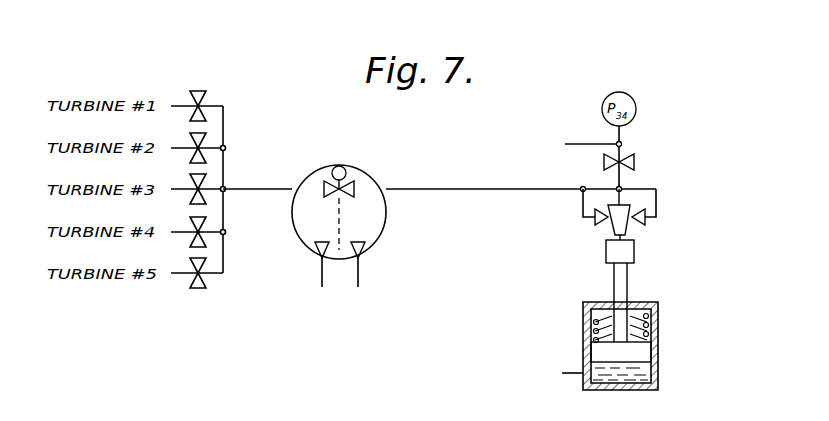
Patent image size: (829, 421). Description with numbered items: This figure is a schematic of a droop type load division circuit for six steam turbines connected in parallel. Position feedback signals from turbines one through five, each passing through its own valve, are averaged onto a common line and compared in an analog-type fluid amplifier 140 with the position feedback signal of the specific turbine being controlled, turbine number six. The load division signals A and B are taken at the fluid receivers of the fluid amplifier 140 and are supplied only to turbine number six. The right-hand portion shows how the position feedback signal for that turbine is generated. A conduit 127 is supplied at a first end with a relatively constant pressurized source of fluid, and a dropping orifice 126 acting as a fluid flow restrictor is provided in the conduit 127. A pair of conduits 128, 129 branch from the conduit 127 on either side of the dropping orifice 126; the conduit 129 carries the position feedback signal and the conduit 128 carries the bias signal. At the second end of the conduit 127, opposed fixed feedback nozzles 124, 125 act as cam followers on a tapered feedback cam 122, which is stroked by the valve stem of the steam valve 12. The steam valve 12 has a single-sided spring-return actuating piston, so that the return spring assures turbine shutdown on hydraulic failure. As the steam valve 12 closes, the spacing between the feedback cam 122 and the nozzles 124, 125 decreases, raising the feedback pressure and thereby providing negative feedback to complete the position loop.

The steam valve 12 is at (636, 279).
The feedback cam 122 is at (612, 232).
The feedback nozzle 124 is at (598, 219).
The feedback nozzle 125 is at (641, 222).
The dropping orifice 126 is at (634, 162).
The conduit 127 is at (623, 142).
The conduit 128 is at (585, 143).
The conduit 129 is at (495, 188).
The analog-type fluid amplifier 140 is at (378, 222).